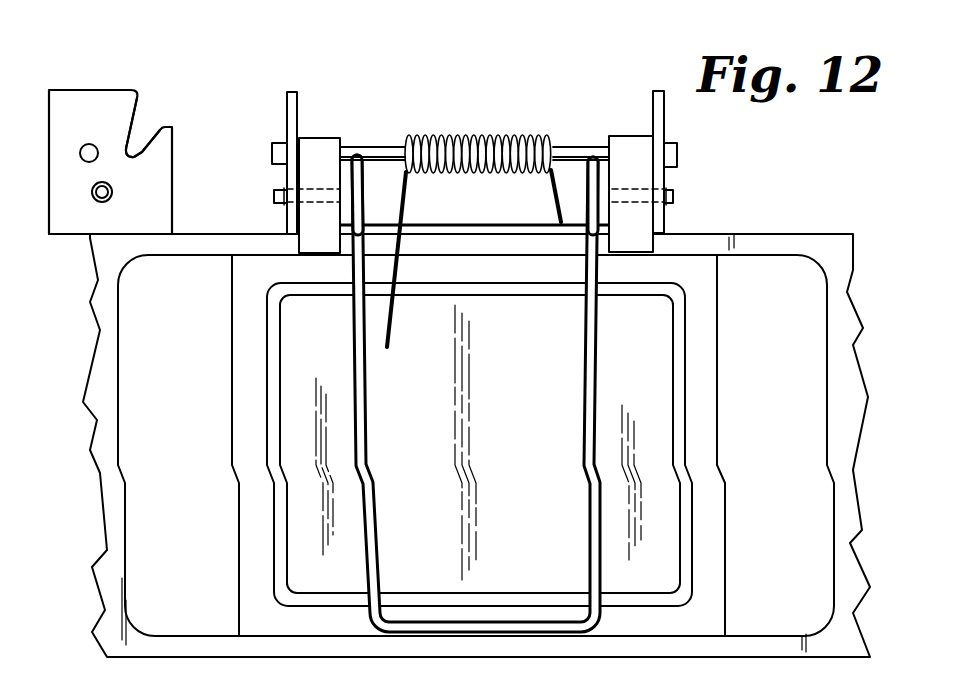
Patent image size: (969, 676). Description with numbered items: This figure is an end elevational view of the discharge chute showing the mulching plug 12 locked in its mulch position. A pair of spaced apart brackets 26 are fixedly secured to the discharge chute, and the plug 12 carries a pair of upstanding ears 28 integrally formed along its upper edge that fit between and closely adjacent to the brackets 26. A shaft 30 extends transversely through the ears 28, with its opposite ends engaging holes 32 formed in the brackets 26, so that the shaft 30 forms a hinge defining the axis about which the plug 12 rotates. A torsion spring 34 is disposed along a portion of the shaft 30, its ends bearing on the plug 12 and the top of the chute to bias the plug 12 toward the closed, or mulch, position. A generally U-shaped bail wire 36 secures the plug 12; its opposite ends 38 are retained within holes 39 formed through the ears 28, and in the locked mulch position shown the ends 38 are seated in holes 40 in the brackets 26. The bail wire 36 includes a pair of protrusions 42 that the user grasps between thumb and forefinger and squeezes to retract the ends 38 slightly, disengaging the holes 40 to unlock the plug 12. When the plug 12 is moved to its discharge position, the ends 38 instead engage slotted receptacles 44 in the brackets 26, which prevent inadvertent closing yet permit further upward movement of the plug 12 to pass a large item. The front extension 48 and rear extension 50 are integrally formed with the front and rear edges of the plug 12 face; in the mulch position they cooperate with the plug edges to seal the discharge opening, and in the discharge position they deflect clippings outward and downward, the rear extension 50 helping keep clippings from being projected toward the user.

The plug 12 is at (753, 252).
The brackets 26 is at (110, 98).
The ears 28 is at (318, 142).
The shaft 30 is at (678, 153).
The holes 32 is at (88, 143).
The torsion spring 34 is at (508, 138).
The bail wire 36 is at (586, 407).
The ends 38 is at (275, 194).
The holes 39 is at (317, 207).
The holes 40 is at (287, 206).
The protrusions 42 is at (360, 157).
The receptacles 44 is at (130, 147).
The front extension 48 is at (808, 273).
The rear extension 50 is at (190, 307).